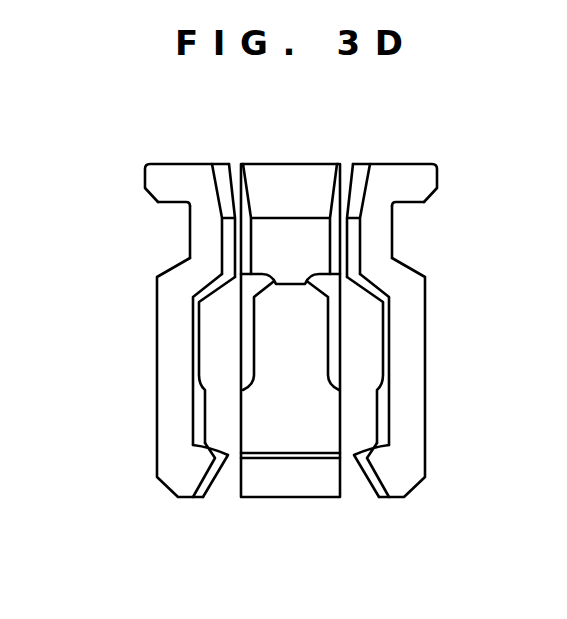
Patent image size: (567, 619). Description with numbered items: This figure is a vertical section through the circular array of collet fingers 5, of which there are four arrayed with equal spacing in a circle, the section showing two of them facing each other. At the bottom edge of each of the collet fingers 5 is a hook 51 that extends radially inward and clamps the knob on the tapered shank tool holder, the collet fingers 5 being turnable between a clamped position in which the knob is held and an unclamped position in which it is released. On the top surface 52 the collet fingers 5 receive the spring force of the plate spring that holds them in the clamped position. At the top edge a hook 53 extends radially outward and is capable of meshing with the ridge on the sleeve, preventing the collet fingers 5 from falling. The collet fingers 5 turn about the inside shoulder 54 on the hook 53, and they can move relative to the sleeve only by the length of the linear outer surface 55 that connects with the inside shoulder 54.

The collet fingers 5 is at (163, 378).
The hook 51 is at (373, 458).
The top surface 52 is at (187, 163).
The hook 53 is at (200, 192).
The inside shoulder 54 is at (185, 208).
The linear outer surface 55 is at (190, 233).